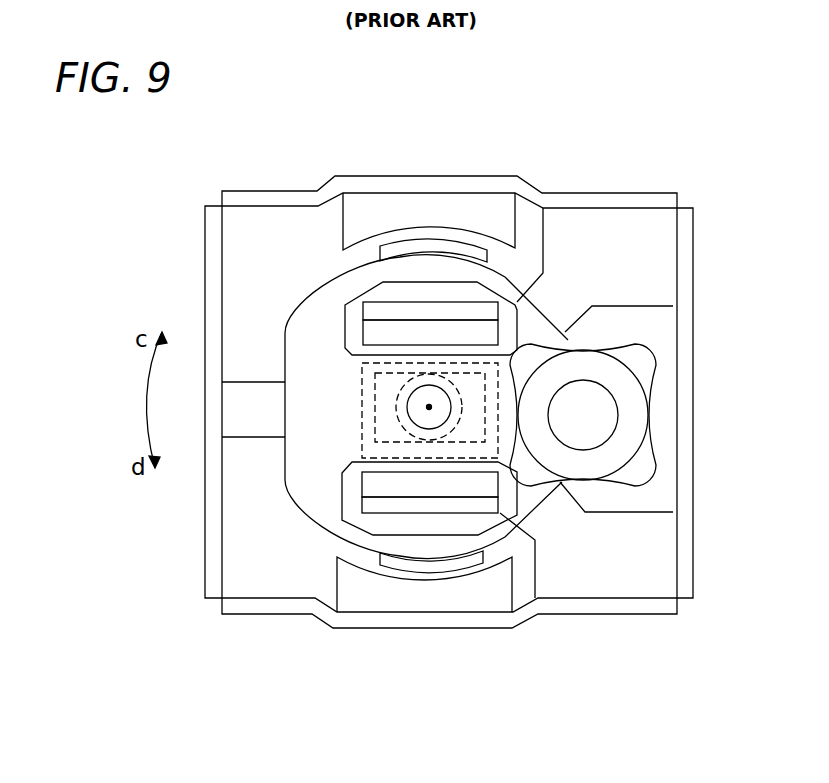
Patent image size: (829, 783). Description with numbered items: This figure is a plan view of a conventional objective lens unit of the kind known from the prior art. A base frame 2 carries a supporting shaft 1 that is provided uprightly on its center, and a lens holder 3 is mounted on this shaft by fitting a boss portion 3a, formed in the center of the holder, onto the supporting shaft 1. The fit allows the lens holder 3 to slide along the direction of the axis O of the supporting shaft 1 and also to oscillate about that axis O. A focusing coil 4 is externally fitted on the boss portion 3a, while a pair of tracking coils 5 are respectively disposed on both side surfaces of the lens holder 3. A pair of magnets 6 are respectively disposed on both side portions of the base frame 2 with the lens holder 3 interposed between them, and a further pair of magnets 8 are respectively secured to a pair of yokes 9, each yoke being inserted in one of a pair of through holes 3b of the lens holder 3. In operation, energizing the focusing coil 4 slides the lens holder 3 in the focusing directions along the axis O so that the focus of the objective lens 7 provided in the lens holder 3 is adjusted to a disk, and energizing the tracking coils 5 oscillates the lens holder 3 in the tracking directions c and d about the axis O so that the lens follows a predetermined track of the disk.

The supporting shaft 1 is at (429, 407).
The base frame 2 is at (212, 227).
The lens holder 3 is at (297, 347).
The boss portion 3a is at (395, 404).
The through holes 3b is at (347, 303).
The focusing coil 4 is at (362, 423).
The tracking coils 5 is at (413, 246).
The magnets 6 is at (480, 207).
The objective lens 7 is at (607, 416).
The magnets 8 is at (498, 333).
The yokes 9 is at (505, 298).
The axis O is at (429, 407).